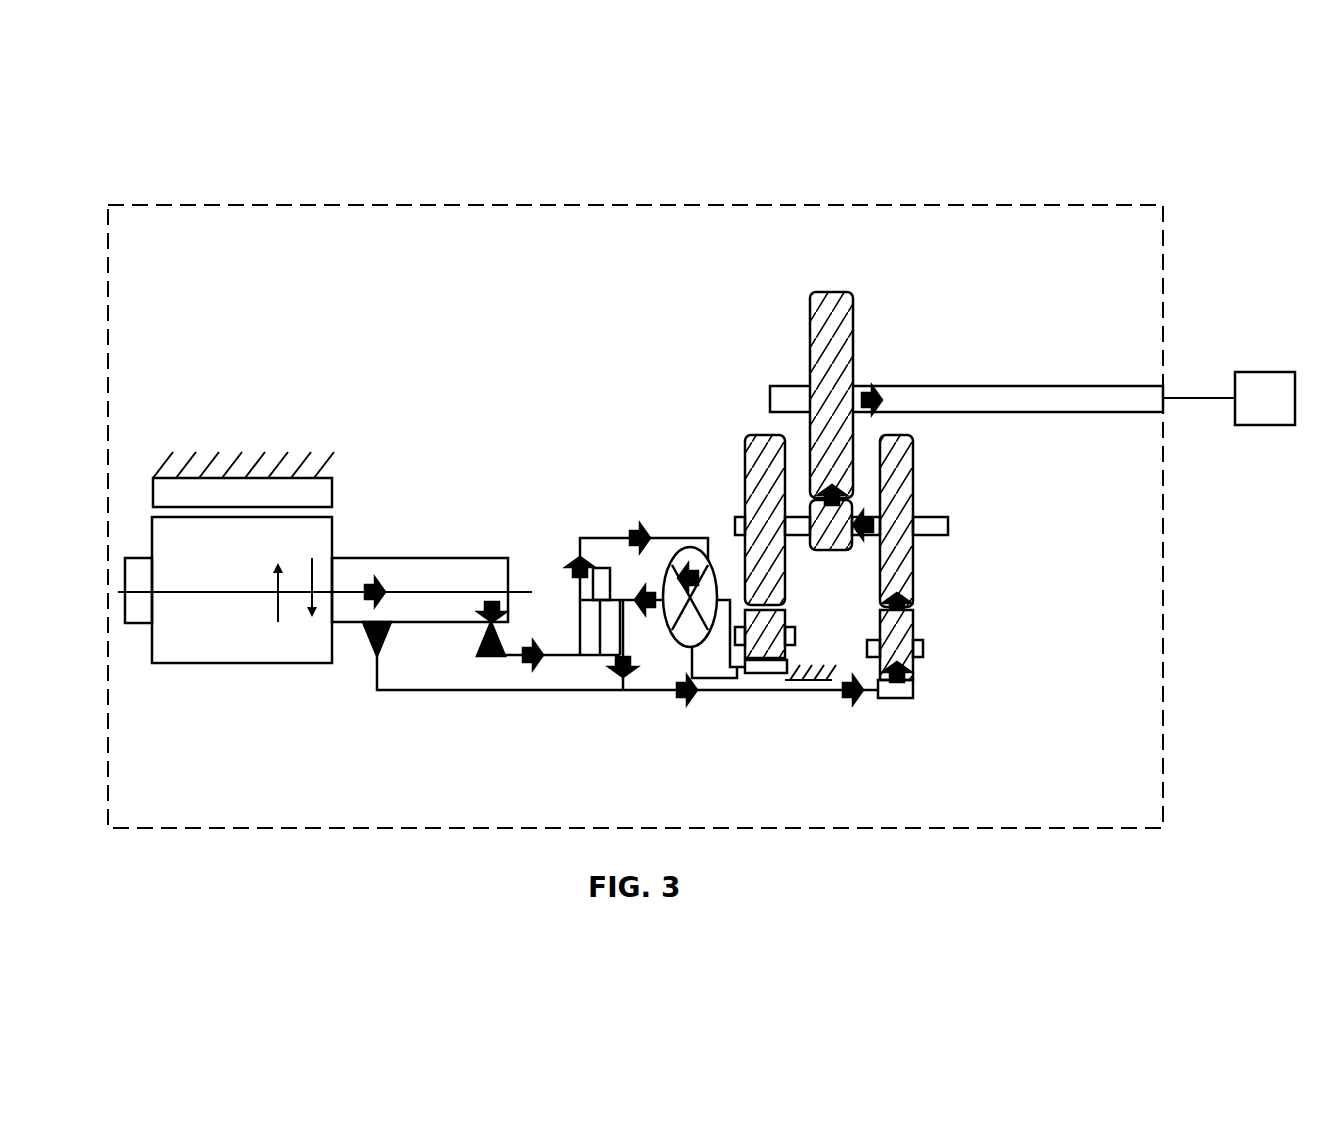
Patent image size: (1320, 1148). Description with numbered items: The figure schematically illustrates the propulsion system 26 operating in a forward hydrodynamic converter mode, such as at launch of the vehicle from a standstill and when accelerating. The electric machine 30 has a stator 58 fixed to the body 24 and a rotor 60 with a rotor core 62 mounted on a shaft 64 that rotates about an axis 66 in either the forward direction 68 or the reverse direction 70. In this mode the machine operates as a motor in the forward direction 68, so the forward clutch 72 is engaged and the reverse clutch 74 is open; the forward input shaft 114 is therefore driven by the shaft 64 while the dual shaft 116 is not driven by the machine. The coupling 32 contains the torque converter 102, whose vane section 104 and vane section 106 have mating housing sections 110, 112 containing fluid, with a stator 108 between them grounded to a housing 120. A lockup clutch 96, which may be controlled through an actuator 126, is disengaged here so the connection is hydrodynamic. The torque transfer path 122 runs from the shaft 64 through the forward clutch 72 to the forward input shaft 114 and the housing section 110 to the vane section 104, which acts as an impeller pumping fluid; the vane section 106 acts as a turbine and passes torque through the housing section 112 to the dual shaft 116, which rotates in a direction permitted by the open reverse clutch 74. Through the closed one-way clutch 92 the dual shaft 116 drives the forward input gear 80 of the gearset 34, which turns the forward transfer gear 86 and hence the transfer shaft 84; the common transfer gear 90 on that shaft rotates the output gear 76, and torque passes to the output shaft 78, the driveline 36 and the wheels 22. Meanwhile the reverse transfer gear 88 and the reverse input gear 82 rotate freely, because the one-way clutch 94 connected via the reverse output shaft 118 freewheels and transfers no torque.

The wheels 22 is at (1265, 398).
The body 24 is at (323, 467).
The propulsion system 26 is at (604, 181).
The electric machine 30 is at (405, 554).
The coupling 32 is at (611, 604).
The gearset 34 is at (869, 523).
The driveline 36 is at (1182, 398).
The stator 58 is at (235, 492).
The rotor 60 is at (288, 663).
The rotor core 62 is at (169, 582).
The shaft 64 is at (367, 558).
The axis 66 is at (420, 590).
The forward direction 68 is at (275, 598).
The reverse direction 70 is at (308, 565).
The forward clutch 72 is at (483, 657).
The reverse clutch 74 is at (367, 647).
The output gear 76 is at (855, 340).
The output shaft 78 is at (1044, 404).
The forward input gear 80 is at (913, 668).
The reverse input gear 82 is at (803, 682).
The transfer shaft 84 is at (948, 525).
The forward transfer gear 86 is at (913, 560).
The reverse transfer gear 88 is at (745, 488).
The common transfer gear 90 is at (827, 552).
The one-way clutch 92 is at (897, 700).
The one-way clutch 94 is at (763, 675).
The lockup clutch 96 is at (588, 608).
The torque converter 102 is at (643, 690).
The vane section 104 is at (708, 547).
The vane section 106 is at (615, 568).
The stator 108 is at (660, 668).
The housing section 110 is at (698, 682).
The housing section 112 is at (670, 550).
The forward input shaft 114 is at (547, 655).
The dual shaft 116 is at (408, 690).
The reverse output shaft 118 is at (737, 690).
The housing 120 is at (840, 690).
The torque transfer path 122 is at (383, 588).
The actuator 126 is at (574, 550).